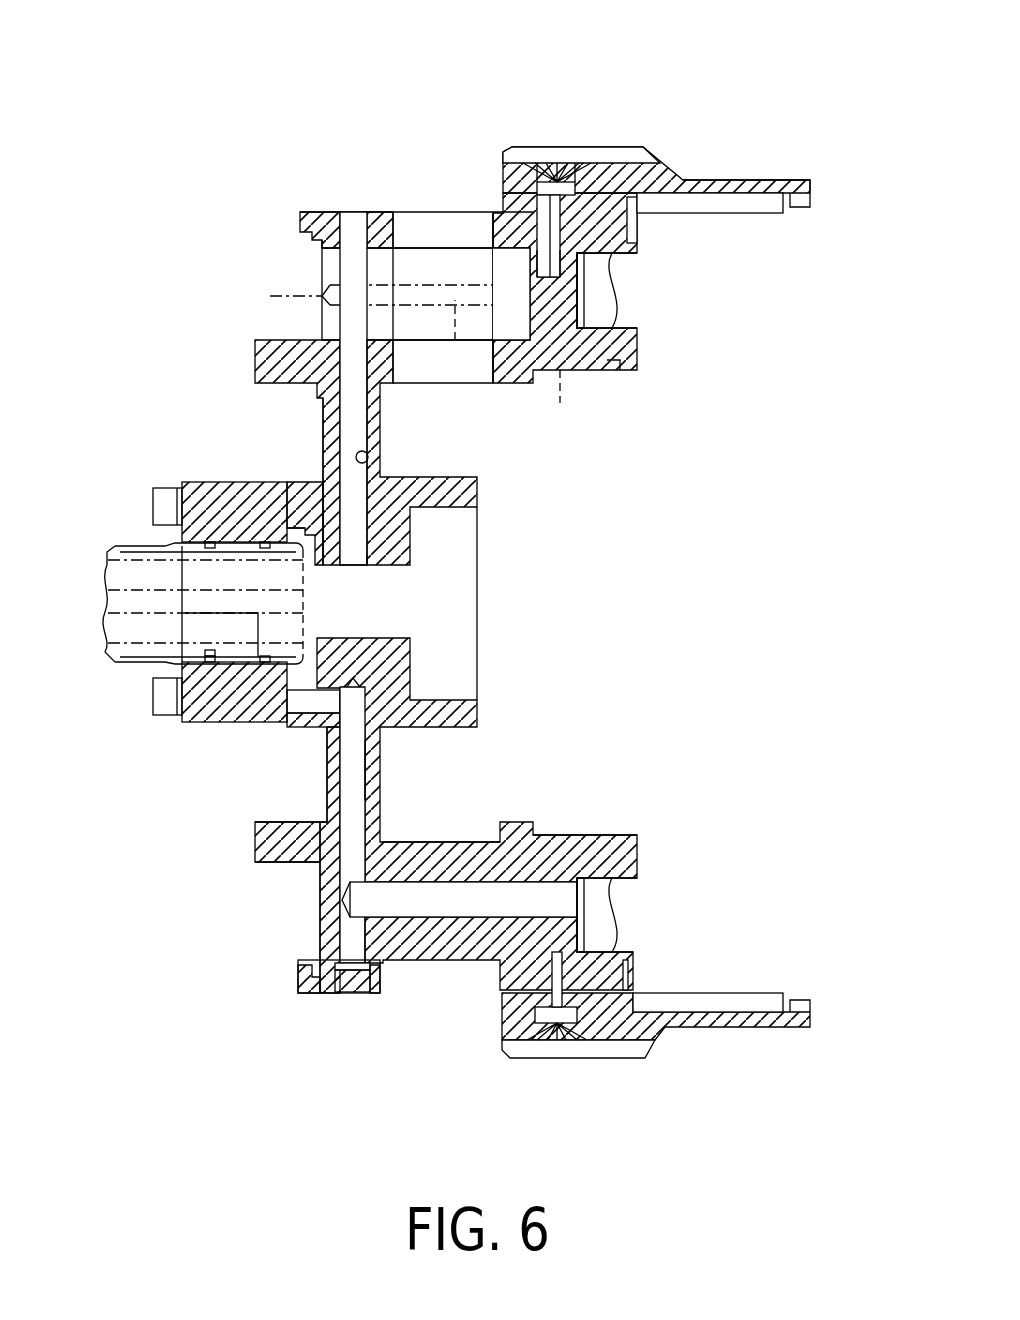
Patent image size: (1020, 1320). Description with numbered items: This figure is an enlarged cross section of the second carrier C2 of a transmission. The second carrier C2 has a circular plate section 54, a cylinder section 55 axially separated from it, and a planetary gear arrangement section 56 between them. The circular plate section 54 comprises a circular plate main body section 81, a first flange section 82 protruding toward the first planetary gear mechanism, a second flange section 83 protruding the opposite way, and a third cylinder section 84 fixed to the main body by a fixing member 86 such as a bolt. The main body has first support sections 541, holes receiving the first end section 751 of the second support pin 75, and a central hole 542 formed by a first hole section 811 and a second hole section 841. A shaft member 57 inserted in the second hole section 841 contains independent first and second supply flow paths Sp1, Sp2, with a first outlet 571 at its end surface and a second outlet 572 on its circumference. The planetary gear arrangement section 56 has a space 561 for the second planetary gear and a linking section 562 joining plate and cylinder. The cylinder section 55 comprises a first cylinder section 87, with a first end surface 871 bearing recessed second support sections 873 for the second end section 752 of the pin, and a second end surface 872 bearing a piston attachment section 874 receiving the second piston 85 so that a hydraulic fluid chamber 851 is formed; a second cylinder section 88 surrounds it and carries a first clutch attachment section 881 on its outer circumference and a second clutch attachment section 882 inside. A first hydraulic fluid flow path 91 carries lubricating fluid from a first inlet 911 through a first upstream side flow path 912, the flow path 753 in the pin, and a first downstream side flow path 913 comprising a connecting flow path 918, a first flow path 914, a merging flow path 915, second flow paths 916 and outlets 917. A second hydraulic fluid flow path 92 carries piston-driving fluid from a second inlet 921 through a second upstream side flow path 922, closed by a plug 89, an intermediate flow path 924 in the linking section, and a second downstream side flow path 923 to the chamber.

The circular plate section 54 is at (350, 183).
The first support sections 541 is at (322, 258).
The central hole 542 is at (430, 600).
The cylinder section 55 is at (643, 137).
The planetary gear arrangement section 56 is at (435, 187).
The space 561 is at (455, 228).
The linking section 562 is at (432, 965).
The shaft member 57 is at (100, 600).
The first outlet 571 is at (320, 535).
The second outlet 572 is at (315, 705).
The second support pin 75 is at (415, 225).
The first end section 751 is at (322, 296).
The second end section 752 is at (559, 405).
The flow path 753 is at (455, 340).
The circular plate main body section 81 is at (323, 422).
The first hole section 811 is at (380, 572).
The first flange section 82 is at (485, 478).
The second flange section 83 is at (255, 360).
The third cylinder section 84 is at (188, 482).
The second hole section 841 is at (225, 482).
The second piston 85 is at (620, 305).
The hydraulic fluid chamber 851 is at (570, 300).
The fixing member 86 is at (155, 508).
The first cylinder section 87 is at (605, 372).
The first end surface 871 is at (492, 225).
The second end surface 872 is at (640, 350).
The second support sections 873 is at (490, 382).
The piston attachment section 874 is at (615, 265).
The second cylinder section 88 is at (678, 180).
The first clutch attachment section 881 is at (548, 155).
The second clutch attachment section 882 is at (740, 215).
The plug 89 is at (352, 995).
The first hydraulic fluid flow path 91 is at (357, 398).
The first inlet 911 is at (358, 570).
The first upstream side flow path 912 is at (368, 457).
The first downstream side flow path 913 is at (553, 280).
The first flow path 914 is at (637, 230).
The merging flow path 915 is at (530, 165).
The second flow paths 916 is at (585, 172).
The outlets 917 is at (583, 165).
The connecting flow path 918 is at (600, 290).
The second hydraulic fluid flow path 92 is at (362, 785).
The second inlet 921 is at (225, 690).
The second upstream side flow path 922 is at (365, 760).
The second downstream side flow path 923 is at (558, 900).
The intermediate flow path 924 is at (430, 890).
The first supply flow path Sp1 is at (113, 575).
The second supply flow path Sp2 is at (113, 645).
The second carrier C2 is at (768, 150).